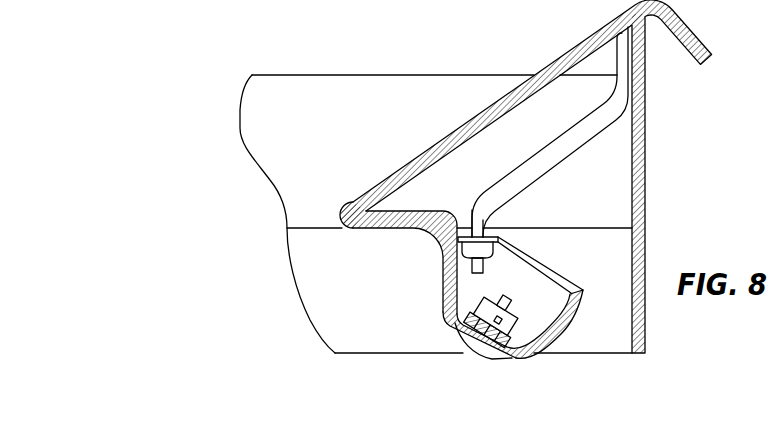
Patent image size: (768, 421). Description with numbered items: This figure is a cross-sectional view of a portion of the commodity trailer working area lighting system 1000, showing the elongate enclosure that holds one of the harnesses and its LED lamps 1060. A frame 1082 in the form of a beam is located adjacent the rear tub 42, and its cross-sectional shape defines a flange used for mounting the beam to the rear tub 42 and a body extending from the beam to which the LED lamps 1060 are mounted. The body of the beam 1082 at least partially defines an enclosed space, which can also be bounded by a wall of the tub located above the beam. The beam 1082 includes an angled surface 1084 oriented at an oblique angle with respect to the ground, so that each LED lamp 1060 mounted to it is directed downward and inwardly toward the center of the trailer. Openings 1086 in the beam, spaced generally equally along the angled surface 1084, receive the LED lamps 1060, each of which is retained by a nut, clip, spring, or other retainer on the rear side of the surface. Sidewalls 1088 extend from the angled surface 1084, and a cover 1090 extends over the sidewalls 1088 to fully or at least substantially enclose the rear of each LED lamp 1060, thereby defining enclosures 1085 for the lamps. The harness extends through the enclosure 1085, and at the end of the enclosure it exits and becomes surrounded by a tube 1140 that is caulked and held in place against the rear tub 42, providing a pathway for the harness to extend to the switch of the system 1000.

The commodity trailer working area lighting system 1000 is at (303, 64).
The rear tub 42 is at (646, 197).
The tube 1140 is at (597, 100).
The frame 1082 is at (436, 302).
The angled surface 1084 is at (450, 320).
The cover 1090 is at (519, 304).
The openings 1086 is at (489, 361).
The sidewalls 1088 is at (442, 262).
The enclosures 1085 is at (512, 270).
The LED lamps 1060 is at (560, 286).